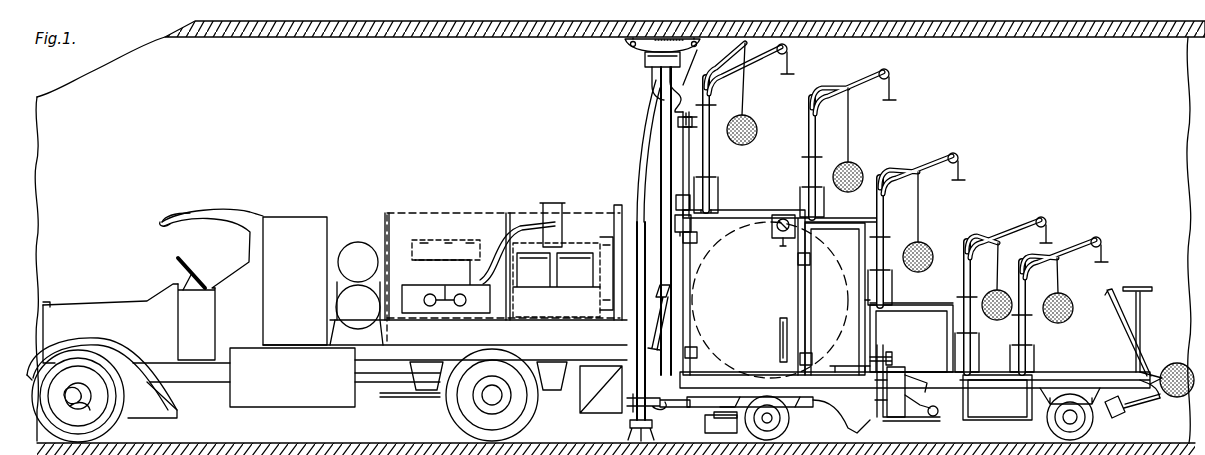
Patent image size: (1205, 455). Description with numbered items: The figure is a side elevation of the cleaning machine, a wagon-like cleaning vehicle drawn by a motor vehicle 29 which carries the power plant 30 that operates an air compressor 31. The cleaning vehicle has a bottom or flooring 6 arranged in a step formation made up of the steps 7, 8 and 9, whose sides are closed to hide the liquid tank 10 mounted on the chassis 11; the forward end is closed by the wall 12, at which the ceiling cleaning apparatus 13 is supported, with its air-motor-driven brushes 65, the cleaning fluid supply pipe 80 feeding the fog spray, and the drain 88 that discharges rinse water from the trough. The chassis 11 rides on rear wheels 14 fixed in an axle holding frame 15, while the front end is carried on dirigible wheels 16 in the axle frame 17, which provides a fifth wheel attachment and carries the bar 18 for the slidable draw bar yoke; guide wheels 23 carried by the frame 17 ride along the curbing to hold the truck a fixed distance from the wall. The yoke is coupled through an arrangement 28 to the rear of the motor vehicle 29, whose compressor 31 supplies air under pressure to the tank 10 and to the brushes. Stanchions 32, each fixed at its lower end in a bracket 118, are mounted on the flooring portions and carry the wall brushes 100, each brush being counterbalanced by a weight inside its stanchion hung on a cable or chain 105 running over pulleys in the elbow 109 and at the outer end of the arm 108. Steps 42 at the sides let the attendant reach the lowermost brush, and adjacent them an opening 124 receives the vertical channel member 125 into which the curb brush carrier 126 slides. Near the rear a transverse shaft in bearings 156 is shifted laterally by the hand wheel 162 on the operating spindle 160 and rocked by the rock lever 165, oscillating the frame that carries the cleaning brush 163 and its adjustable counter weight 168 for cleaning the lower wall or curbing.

The bottom or flooring 6 is at (1096, 372).
The step 7 is at (926, 308).
The step 8 is at (844, 226).
The step 9 is at (740, 214).
The liquid tank 10 is at (838, 312).
The chassis 11 is at (840, 383).
The wall 12 is at (695, 277).
The ceiling cleaning apparatus 13 is at (642, 76).
The wheels 14 is at (1078, 418).
The axle holding frame 15 is at (1040, 400).
The wheels 16 is at (790, 426).
The axle frame 17 is at (858, 415).
The bar 18 is at (680, 400).
The guide wheels 23 is at (705, 426).
The arrangement 28 is at (632, 426).
The motor vehicle 29 is at (393, 350).
The power plant 30 is at (578, 272).
The air compressor 31 is at (433, 275).
The stanchions 32 is at (706, 162).
The steps 42 is at (997, 397).
The brushes 65 is at (632, 47).
The cleaning fluid supply pipe 80 is at (685, 172).
The drain 88 is at (640, 152).
The brush 100 is at (757, 130).
The cable or chain 105 is at (888, 99).
The arm 108 is at (1060, 256).
The elbow 109 is at (980, 233).
The bracket 118 is at (968, 352).
The opening 124 is at (911, 338).
The vertical channel member 125 is at (879, 420).
The curb brush carrier 126 is at (871, 334).
The bearings 156 is at (1152, 372).
The operating spindle 160 is at (1140, 310).
The hand wheel 162 is at (1142, 282).
The cleaning brush 163 is at (1177, 397).
The rock lever 165 is at (1112, 320).
The adjustable counter weight 168 is at (1130, 416).